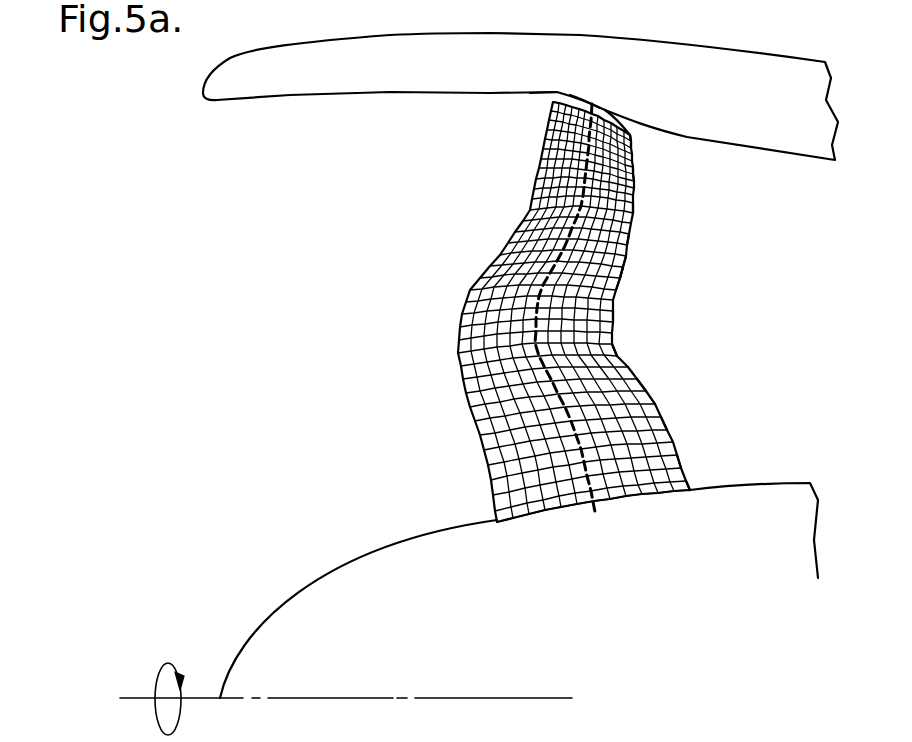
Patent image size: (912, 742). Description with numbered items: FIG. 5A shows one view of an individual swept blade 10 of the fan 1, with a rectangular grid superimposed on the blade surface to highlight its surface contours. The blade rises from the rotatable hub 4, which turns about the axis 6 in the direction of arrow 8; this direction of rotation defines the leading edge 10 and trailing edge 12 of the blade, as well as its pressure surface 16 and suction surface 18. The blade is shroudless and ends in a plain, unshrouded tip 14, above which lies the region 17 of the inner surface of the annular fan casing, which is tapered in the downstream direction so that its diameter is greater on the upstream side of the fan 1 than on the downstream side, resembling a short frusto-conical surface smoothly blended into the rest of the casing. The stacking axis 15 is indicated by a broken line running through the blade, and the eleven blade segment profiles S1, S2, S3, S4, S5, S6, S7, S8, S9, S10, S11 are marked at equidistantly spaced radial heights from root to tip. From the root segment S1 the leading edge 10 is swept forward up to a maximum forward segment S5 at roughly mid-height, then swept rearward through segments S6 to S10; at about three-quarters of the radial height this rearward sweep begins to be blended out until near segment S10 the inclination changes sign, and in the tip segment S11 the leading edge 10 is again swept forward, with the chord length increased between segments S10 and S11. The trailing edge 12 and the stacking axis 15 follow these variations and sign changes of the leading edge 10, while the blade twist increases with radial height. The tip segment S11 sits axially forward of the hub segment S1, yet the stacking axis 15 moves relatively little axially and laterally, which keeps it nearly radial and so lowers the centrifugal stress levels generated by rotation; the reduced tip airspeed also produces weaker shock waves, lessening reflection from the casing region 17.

The fan 1 is at (430, 317).
The hub 4 is at (426, 642).
The axis 6 is at (480, 697).
The arrow 8 is at (180, 716).
The leading edge 10 is at (458, 360).
The trailing edge 12 is at (617, 283).
The tip 14 is at (617, 120).
The stacking axis 15 is at (586, 520).
The pressure surface 16 is at (548, 98).
The casing inner surface region 17 is at (588, 98).
The suction surface 18 is at (323, 70).
The root segment S1 is at (695, 485).
The blade segment S2 is at (682, 458).
The blade segment S3 is at (668, 423).
The blade segment S4 is at (647, 388).
The maximum forward segment S5 is at (618, 352).
The blade segment S6 is at (617, 313).
The blade segment S7 is at (620, 272).
The blade segment S8 is at (628, 238).
The blade segment S9 is at (637, 208).
The blade segment S10 is at (638, 175).
The tip segment S11 is at (632, 140).